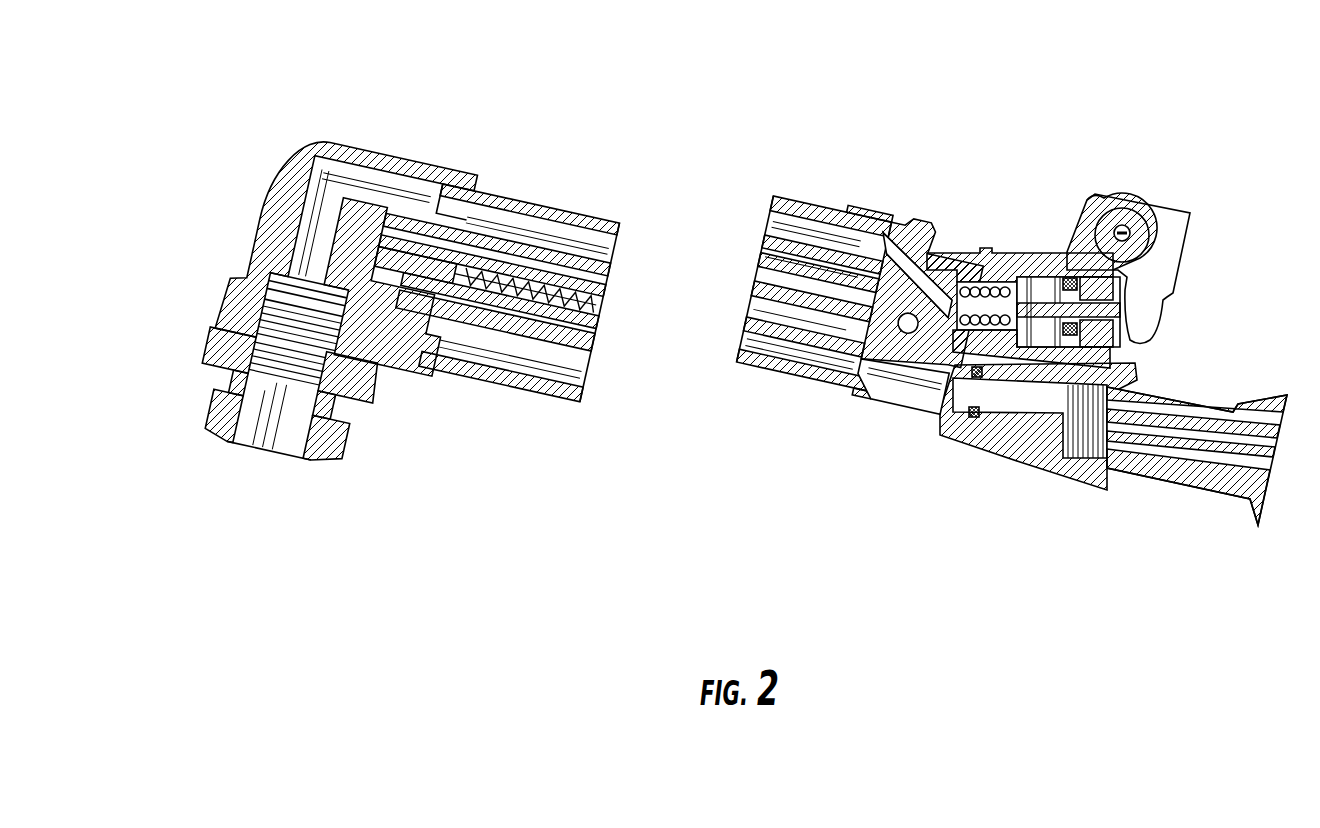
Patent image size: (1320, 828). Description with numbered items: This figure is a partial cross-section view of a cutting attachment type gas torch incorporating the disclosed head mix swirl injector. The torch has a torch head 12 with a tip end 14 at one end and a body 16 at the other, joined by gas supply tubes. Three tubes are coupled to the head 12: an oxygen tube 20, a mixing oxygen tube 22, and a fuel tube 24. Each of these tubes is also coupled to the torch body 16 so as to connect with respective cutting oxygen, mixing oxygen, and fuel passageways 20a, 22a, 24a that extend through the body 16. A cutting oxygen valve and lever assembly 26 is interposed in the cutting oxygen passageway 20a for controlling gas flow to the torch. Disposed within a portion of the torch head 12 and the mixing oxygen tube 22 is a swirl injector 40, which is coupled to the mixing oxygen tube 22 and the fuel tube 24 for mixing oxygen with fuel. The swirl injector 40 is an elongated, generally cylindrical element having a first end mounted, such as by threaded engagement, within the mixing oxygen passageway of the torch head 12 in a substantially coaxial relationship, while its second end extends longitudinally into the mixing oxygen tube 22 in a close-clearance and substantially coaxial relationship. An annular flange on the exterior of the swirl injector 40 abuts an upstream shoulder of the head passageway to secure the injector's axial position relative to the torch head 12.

The torch head 12 is at (305, 153).
The tip end 14 is at (212, 252).
The body 16 is at (944, 474).
The oxygen tube 20 is at (822, 242).
The cutting oxygen passageway 20a is at (915, 270).
The mixing oxygen tube 22 is at (825, 303).
The mixing oxygen passageway 22a is at (905, 313).
The fuel tube 24 is at (772, 355).
The fuel passageway 24a is at (900, 385).
The cutting oxygen valve and lever assembly 26 is at (1130, 190).
The swirl injector 40 is at (533, 285).